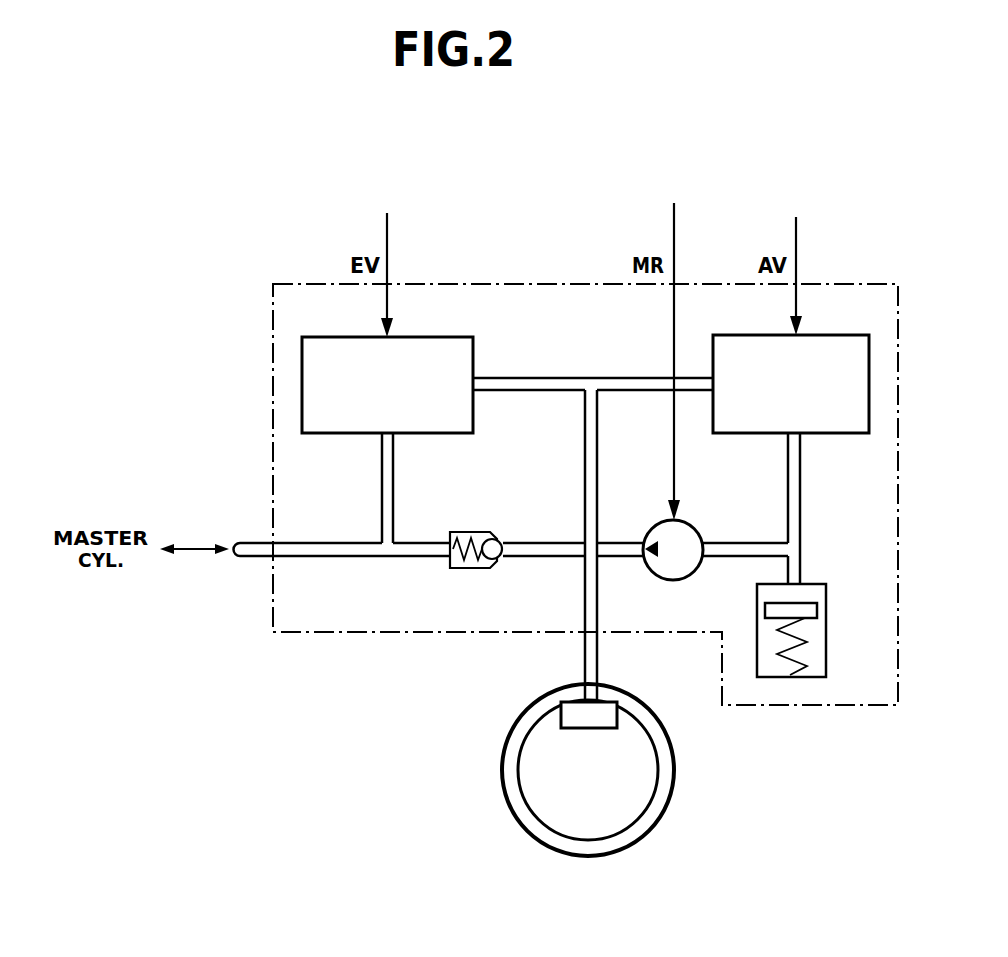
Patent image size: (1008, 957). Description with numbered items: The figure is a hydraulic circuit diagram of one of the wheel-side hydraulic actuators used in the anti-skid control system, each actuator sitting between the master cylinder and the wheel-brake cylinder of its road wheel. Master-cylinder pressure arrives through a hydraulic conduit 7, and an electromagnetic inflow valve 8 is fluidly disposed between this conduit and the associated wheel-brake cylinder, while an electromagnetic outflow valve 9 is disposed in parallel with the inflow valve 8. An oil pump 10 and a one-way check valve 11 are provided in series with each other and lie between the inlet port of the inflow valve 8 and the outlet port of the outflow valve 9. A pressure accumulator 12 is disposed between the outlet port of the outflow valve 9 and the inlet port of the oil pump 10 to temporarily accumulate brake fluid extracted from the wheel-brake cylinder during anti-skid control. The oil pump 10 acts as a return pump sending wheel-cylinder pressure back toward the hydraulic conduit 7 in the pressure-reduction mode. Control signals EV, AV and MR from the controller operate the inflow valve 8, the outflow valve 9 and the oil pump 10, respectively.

The hydraulic conduit 7 is at (262, 542).
The electromagnetic inflow valve 8 is at (473, 349).
The electromagnetic outflow valve 9 is at (842, 335).
The oil pump 10 is at (693, 523).
The one-way check valve 11 is at (478, 532).
The pressure accumulator 12 is at (826, 630).